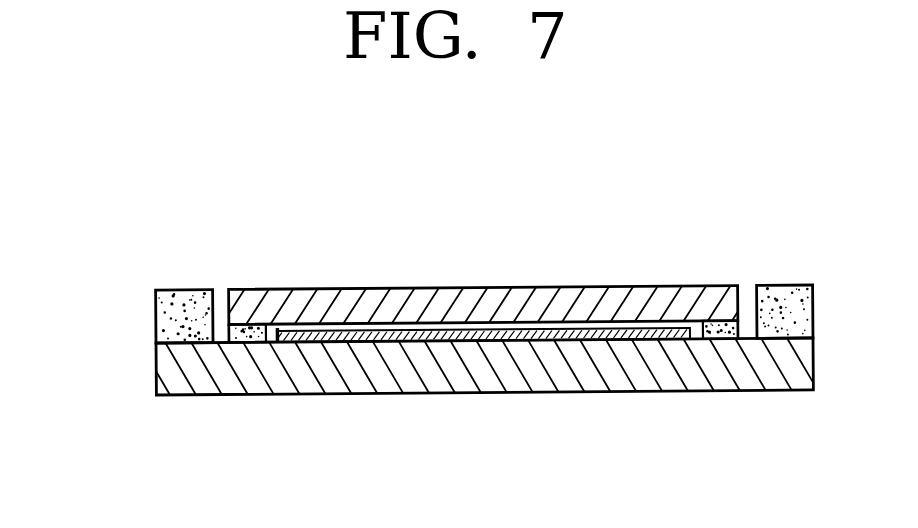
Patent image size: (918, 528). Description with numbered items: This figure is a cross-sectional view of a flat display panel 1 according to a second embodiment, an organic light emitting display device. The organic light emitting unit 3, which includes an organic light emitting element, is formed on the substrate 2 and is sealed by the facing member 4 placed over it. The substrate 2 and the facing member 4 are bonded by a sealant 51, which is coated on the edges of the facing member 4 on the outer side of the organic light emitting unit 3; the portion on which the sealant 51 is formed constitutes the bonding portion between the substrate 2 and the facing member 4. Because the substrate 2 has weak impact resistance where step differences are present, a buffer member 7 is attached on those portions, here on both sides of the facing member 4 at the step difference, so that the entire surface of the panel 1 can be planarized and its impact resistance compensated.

The panel 1 is at (112, 231).
The substrate 2 is at (550, 363).
The organic light emitting unit 3 is at (447, 333).
The facing member 4 is at (351, 297).
The sealant 51 is at (251, 329).
The buffer member 7 is at (184, 289).